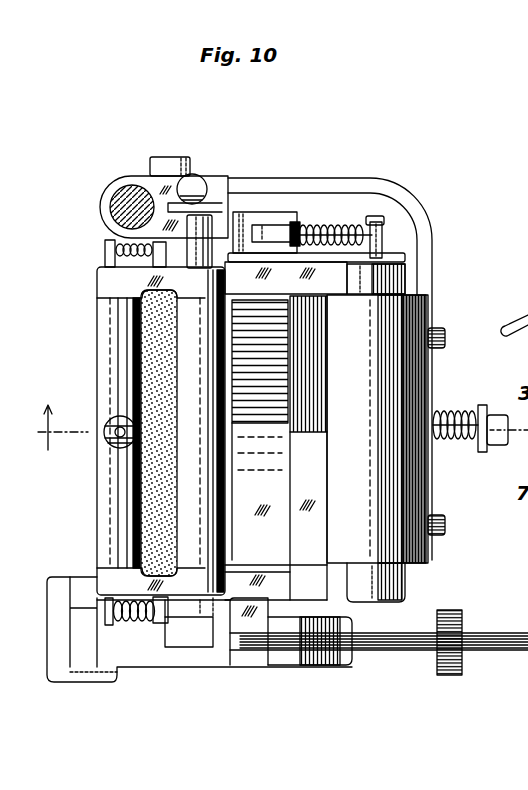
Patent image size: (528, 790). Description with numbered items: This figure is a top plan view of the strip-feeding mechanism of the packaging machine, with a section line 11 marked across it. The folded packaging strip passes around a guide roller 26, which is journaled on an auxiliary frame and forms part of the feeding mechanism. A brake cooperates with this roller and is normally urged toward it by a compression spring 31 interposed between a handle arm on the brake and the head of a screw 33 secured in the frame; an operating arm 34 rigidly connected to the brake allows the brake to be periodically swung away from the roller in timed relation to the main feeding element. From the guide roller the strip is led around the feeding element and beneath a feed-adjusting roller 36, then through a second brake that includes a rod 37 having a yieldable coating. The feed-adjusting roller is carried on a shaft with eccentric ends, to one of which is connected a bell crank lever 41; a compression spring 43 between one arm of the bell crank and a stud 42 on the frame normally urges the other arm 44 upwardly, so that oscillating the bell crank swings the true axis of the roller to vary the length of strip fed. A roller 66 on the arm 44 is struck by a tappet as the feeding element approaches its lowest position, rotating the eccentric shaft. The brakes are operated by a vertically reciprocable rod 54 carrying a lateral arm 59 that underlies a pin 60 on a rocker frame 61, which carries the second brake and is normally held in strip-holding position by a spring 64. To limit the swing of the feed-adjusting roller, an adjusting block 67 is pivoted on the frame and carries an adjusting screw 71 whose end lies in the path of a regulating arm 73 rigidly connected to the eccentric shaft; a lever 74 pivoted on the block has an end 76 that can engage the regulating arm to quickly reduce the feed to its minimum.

The section line 11 is at (48, 419).
The guide roller 26 is at (412, 312).
The compression spring 31 is at (448, 440).
The screw 33 is at (492, 417).
The operating arm 34 is at (384, 185).
The feed-adjusting roller 36 is at (232, 388).
The rod 37 is at (147, 333).
The bell crank lever 41 is at (249, 200).
The stud 42 is at (378, 222).
The compression spring 43 is at (311, 226).
The arm of the bell crank 44 is at (262, 218).
The vertically reciprocable rod 54 is at (112, 210).
The lateral arm 59 is at (142, 177).
The pin 60 is at (196, 228).
The rocker frame 61 is at (214, 338).
The spring 64 is at (138, 625).
The roller 66 is at (283, 236).
The adjusting block 67 is at (192, 645).
The adjusting screw 71 is at (373, 653).
The regulating arm 73 is at (193, 644).
The lever 74 is at (303, 665).
The end of the lever 76 is at (238, 643).